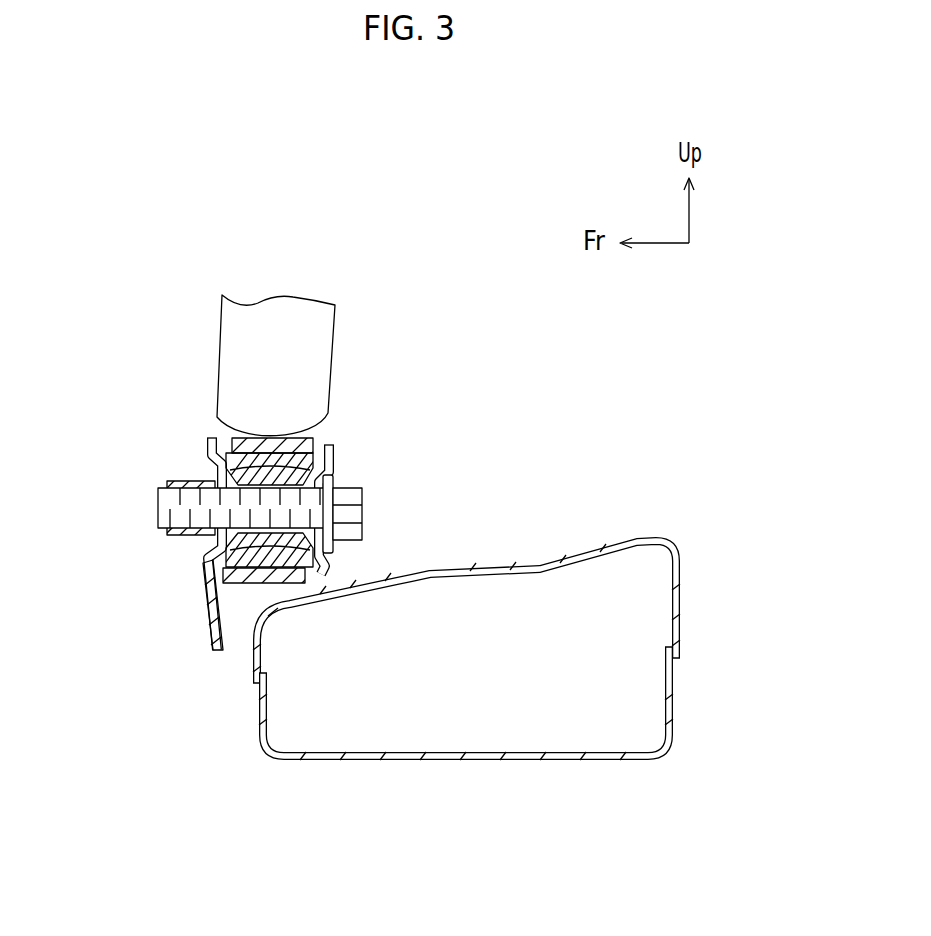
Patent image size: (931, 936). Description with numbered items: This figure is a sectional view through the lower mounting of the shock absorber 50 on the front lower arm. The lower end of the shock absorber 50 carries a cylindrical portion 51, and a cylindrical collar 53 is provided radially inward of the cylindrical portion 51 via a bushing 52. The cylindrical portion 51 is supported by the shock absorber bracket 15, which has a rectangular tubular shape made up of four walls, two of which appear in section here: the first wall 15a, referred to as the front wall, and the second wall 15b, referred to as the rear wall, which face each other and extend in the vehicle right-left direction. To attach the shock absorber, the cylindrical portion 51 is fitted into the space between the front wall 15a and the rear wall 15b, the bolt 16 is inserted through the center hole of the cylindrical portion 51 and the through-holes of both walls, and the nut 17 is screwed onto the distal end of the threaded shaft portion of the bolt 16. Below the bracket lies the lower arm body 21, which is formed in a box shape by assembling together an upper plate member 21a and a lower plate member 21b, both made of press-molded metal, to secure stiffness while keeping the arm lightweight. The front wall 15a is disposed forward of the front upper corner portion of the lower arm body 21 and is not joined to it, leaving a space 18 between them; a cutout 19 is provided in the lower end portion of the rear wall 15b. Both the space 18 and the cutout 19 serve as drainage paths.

The shock absorber bracket 15 is at (254, 543).
The first wall 15a is at (210, 623).
The second wall 15b is at (335, 455).
The bolt 16 is at (165, 508).
The nut 17 is at (175, 482).
The space 18 is at (241, 666).
The cutout 19 is at (323, 578).
The lower arm body 21 is at (534, 650).
The upper plate member 21a is at (466, 612).
The lower plate member 21b is at (466, 703).
The shock absorber 50 is at (301, 290).
The cylindrical portion 51 is at (265, 437).
The bushing 52 is at (293, 443).
The collar 53 is at (228, 475).